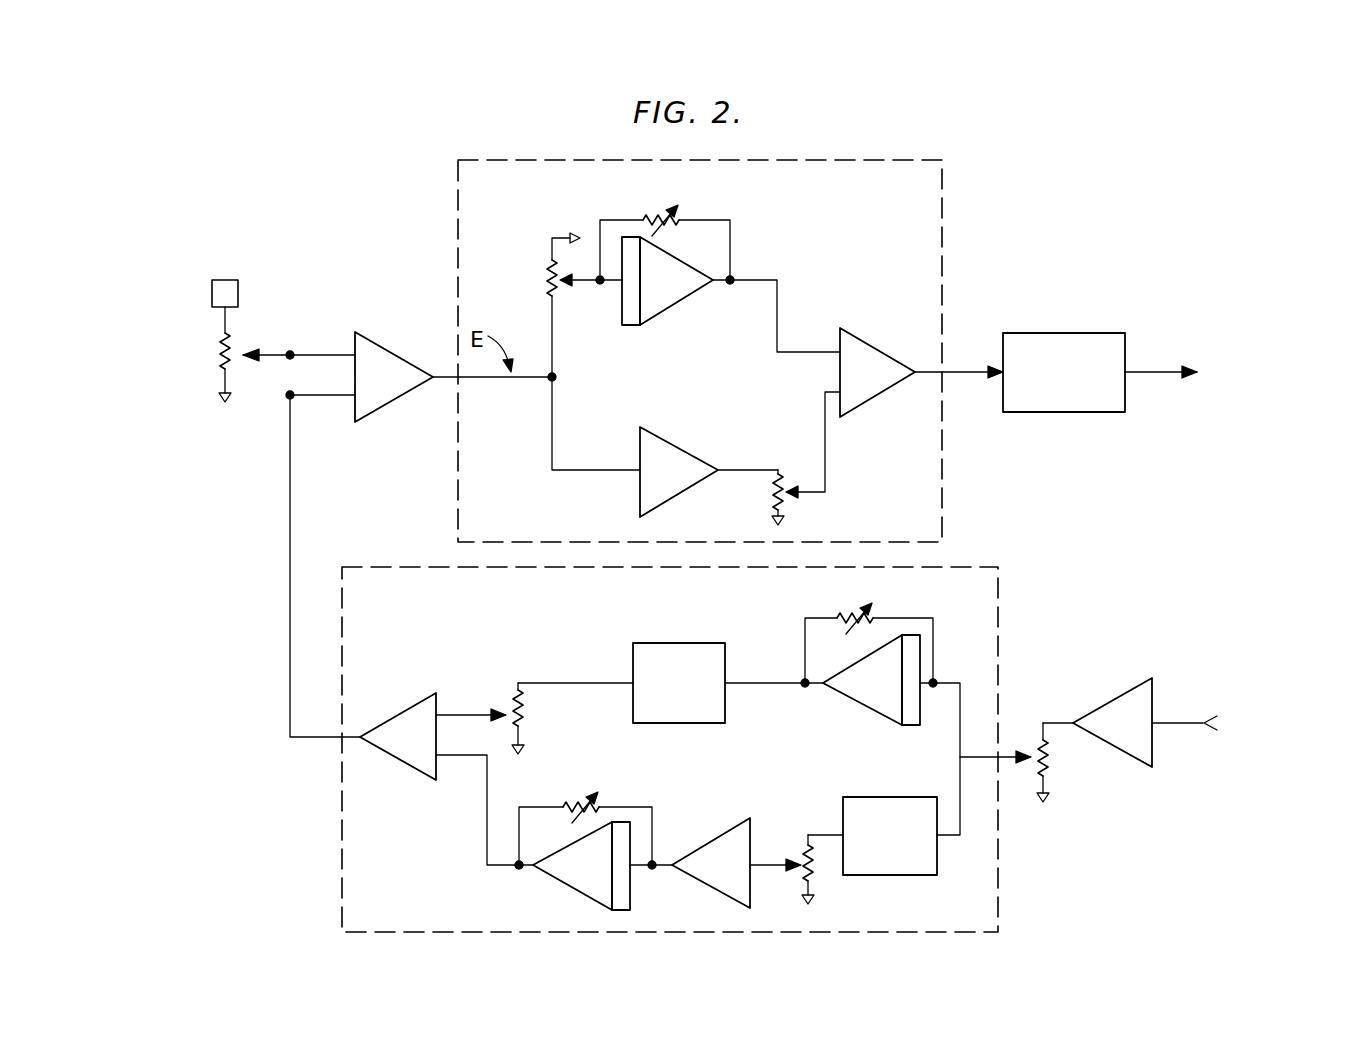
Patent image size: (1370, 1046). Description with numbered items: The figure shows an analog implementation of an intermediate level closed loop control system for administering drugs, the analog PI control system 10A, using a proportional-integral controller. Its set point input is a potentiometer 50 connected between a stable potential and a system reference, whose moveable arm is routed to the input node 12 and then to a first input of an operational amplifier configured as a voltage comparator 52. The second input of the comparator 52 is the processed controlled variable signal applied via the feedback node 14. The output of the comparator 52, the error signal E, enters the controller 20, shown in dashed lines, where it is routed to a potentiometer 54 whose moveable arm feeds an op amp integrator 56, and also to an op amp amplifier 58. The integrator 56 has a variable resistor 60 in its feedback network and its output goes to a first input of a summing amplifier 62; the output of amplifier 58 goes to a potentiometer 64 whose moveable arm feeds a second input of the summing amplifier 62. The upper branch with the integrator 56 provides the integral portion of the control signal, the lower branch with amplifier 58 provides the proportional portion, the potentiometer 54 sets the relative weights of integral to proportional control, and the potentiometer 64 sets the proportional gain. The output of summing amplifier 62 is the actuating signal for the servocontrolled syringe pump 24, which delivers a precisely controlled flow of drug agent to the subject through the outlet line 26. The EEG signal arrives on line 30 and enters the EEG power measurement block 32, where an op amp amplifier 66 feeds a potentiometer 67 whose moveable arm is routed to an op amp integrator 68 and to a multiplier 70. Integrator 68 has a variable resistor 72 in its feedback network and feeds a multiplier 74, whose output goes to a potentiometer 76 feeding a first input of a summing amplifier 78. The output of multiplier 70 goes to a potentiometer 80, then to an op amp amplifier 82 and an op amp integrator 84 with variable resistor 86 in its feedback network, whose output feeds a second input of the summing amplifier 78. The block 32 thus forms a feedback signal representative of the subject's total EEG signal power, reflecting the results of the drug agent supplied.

The analog PI control system 10A is at (287, 914).
The input node 12 is at (293, 352).
The feedback node 14 is at (288, 399).
The controller 20 is at (943, 233).
The servocontrolled syringe pump 24 is at (1080, 333).
The servo-controlled syringe pump outlet line 26 is at (1143, 369).
The EEG electrode output line 30 is at (1160, 723).
The EEG power measurement block 32 is at (1000, 613).
The potentiometer 50 is at (229, 336).
The voltage comparator 52 is at (383, 347).
The potentiometer 54 is at (548, 270).
The op amp integrator 56 is at (678, 305).
The op amp amplifier 58 is at (672, 486).
The variable resistor 60 is at (647, 214).
The summing amplifier 62 is at (873, 394).
The potentiometer 64 is at (784, 498).
The op amp amplifier 66 is at (1138, 768).
The potentiometer 67 is at (1050, 760).
The op amp integrator 68 is at (866, 716).
The multiplier 70 is at (905, 797).
The variable resistor 72 is at (843, 614).
The multiplier 74 is at (698, 643).
The potentiometer 76 is at (514, 700).
The summing amplifier 78 is at (413, 770).
The potentiometer 80 is at (804, 846).
The op amp amplifier 82 is at (710, 890).
The op amp integrator 84 is at (572, 890).
The variable resistor 86 is at (573, 800).